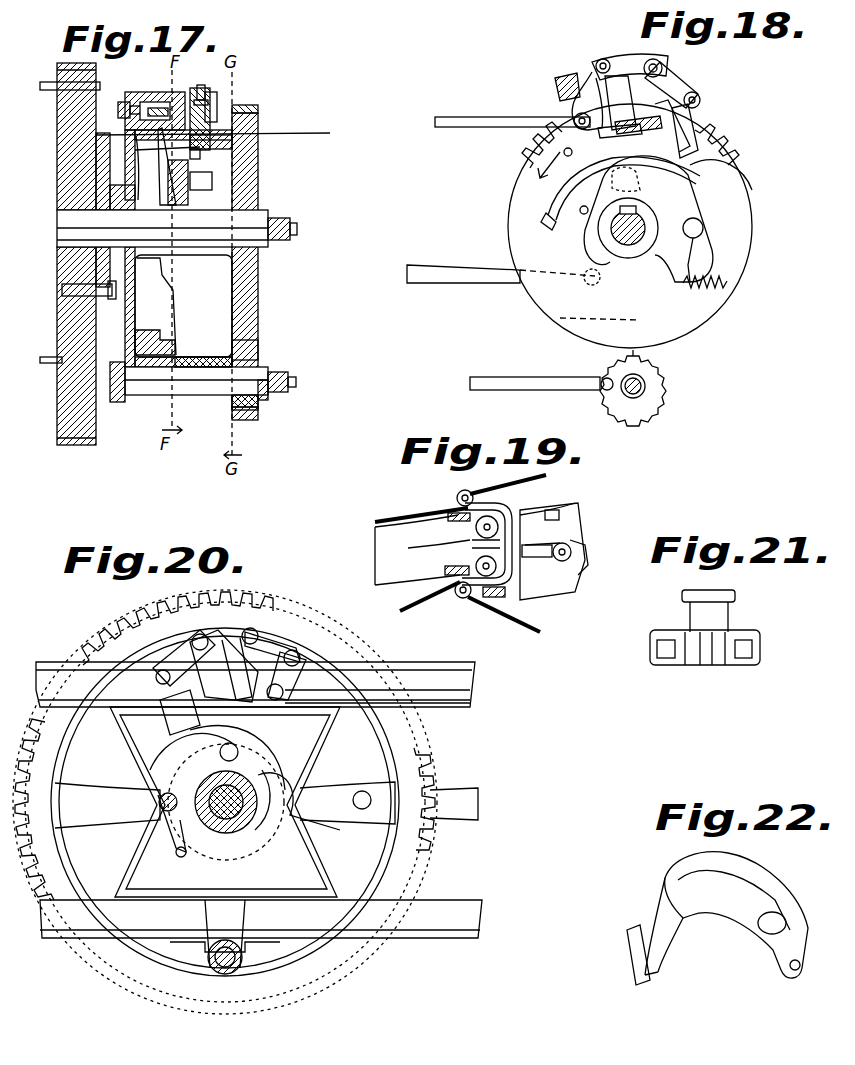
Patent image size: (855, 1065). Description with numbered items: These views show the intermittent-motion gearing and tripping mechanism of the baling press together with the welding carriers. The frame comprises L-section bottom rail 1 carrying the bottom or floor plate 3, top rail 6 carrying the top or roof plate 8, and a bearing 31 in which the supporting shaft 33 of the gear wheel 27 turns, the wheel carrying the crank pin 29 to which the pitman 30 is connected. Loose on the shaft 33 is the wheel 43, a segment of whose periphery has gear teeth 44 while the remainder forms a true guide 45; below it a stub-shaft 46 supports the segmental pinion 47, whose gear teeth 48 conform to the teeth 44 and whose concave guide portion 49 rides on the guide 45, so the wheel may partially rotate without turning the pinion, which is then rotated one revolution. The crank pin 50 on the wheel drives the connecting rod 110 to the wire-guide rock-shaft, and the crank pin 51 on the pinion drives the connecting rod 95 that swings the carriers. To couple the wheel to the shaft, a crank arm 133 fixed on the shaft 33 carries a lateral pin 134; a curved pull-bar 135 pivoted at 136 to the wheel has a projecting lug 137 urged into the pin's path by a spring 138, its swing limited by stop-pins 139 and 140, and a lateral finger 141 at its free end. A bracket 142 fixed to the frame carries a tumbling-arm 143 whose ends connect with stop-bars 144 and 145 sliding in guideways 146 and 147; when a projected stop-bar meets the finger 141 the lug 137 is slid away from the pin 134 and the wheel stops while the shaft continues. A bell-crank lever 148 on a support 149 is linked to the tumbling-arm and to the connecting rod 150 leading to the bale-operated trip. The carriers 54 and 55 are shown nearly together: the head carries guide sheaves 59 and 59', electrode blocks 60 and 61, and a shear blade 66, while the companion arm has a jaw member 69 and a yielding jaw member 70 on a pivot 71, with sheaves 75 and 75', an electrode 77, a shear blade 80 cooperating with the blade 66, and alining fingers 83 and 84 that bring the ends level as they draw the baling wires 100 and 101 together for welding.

In FIG. 17, the bottom rail 1 is at (158, 338).
In FIG. 20, the bottom rail 1 is at (55, 940).
In FIG. 17, the bottom or floor plate 3 is at (50, 363).
In FIG. 17, the top rail 6 is at (136, 105).
In FIG. 20, the top rail 6 is at (55, 662).
In FIG. 17, the top or roof plate 8 is at (73, 77).
In FIG. 17, the gear wheel 27 is at (78, 440).
In FIG. 20, the gear wheel 27 is at (100, 650).
In FIG. 20, the crank pin 29 is at (362, 791).
In FIG. 20, the pitman 30 is at (460, 820).
In FIG. 17, the bearing 31 is at (110, 260).
In FIG. 17, the supporting shaft 33 is at (212, 240).
In FIG. 18, the supporting shaft 33 is at (627, 245).
In FIG. 20, the supporting shaft 33 is at (250, 820).
In FIG. 17, the wheel 43 is at (258, 300).
In FIG. 18, the wheel 43 is at (735, 229).
In FIG. 17, the gear teeth 44 is at (258, 108).
In FIG. 18, the gear teeth 44 is at (525, 155).
In FIG. 17, the guide 45 is at (258, 340).
In FIG. 18, the guide 45 is at (545, 300).
In FIG. 17, the stub-shaft 46 is at (203, 380).
In FIG. 18, the stub-shaft 46 is at (630, 398).
In FIG. 20, the stub-shaft 46 is at (225, 975).
In FIG. 17, the segmental pinion 47 is at (258, 404).
In FIG. 18, the segmental pinion 47 is at (640, 408).
In FIG. 20, the segmental pinion 47 is at (235, 968).
In FIG. 17, the gear teeth 48 is at (250, 420).
In FIG. 18, the gear teeth 48 is at (662, 405).
In FIG. 17, the concave guide portion 49 is at (232, 362).
In FIG. 18, the concave guide portion 49 is at (650, 358).
In FIG. 17, the crank pin 50 is at (297, 229).
In FIG. 17, the crank pin 51 is at (296, 383).
In FIG. 19, the carrier 54 is at (375, 550).
In FIG. 19, the carrier 55 is at (585, 530).
In FIG. 19, the grooved roller or guide sheave 59 is at (437, 501).
In FIG. 19, the grooved roller or guide sheave 59' is at (413, 576).
In FIG. 19, the block 60 is at (480, 518).
In FIG. 19, the block 61 is at (470, 575).
In FIG. 19, the shear blade 66 is at (470, 545).
In FIG. 19, the jaw member 69 is at (530, 505).
In FIG. 19, the yielding jaw member 70 is at (552, 586).
In FIG. 19, the pivot 71 is at (588, 568).
In FIG. 19, the grooved roller or guide sheave 75 is at (501, 484).
In FIG. 19, the grooved roller or guide sheave 75' is at (455, 607).
In FIG. 19, the electrical terminal block or electrode 77 is at (505, 596).
In FIG. 19, the shear blade 80 is at (555, 580).
In FIG. 19, the downwardly curved finger 83 is at (560, 514).
In FIG. 19, the finger 84 is at (571, 553).
In FIG. 17, the connecting rod 95 is at (268, 395).
In FIG. 18, the connecting rod 95 is at (490, 377).
In FIG. 19, the baling wire 100 is at (395, 518).
In FIG. 19, the baling wire 101 is at (528, 632).
In FIG. 17, the connecting rod 110 is at (268, 243).
In FIG. 18, the connecting rod 110 is at (445, 265).
In FIG. 17, the crank arm 133 is at (188, 165).
In FIG. 18, the crank arm 133 is at (690, 203).
In FIG. 20, the crank arm 133 is at (295, 835).
In FIG. 17, the lateral pin 134 is at (212, 182).
In FIG. 20, the lateral pin 134 is at (175, 755).
In FIG. 17, the curved pull-bar 135 is at (232, 150).
In FIG. 18, the curved pull-bar 135 is at (565, 190).
In FIG. 20, the curved pull-bar 135 is at (330, 805).
In FIG. 22, the curved pull-bar 135 is at (713, 922).
In FIG. 18, the pivot 136 is at (698, 240).
In FIG. 20, the pivot 136 is at (160, 820).
In FIG. 20, the projecting lug 137 is at (280, 776).
In FIG. 22, the projecting lug 137 is at (668, 895).
In FIG. 18, the spring 138 is at (730, 288).
In FIG. 18, the stop-pin 139 is at (584, 214).
In FIG. 18, the stop-pin 140 is at (564, 151).
In FIG. 17, the lateral finger 141 is at (228, 136).
In FIG. 18, the lateral finger 141 is at (541, 222).
In FIG. 22, the lateral finger 141 is at (630, 958).
In FIG. 17, the bracket 142 is at (190, 130).
In FIG. 18, the bracket 142 is at (662, 78).
In FIG. 20, the bracket 142 is at (222, 640).
In FIG. 21, the bracket 142 is at (728, 614).
In FIG. 17, the tumbling-arm 143 is at (201, 85).
In FIG. 18, the tumbling-arm 143 is at (700, 96).
In FIG. 20, the tumbling-arm 143 is at (185, 648).
In FIG. 17, the stop-bar 144 is at (145, 172).
In FIG. 18, the stop-bar 144 is at (612, 140).
In FIG. 20, the stop-bar 144 is at (240, 752).
In FIG. 18, the stop-bar 145 is at (700, 180).
In FIG. 20, the stop-bar 145 is at (178, 718).
In FIG. 17, the guideway 146 is at (215, 108).
In FIG. 18, the guideway 146 is at (575, 106).
In FIG. 21, the guideway 146 is at (752, 648).
In FIG. 18, the guideway 147 is at (700, 125).
In FIG. 21, the guideway 147 is at (665, 658).
In FIG. 18, the bell-crank lever 148 is at (585, 68).
In FIG. 20, the bell-crank lever 148 is at (270, 640).
In FIG. 18, the support 149 is at (555, 80).
In FIG. 20, the support 149 is at (300, 660).
In FIG. 18, the connecting rod 150 is at (466, 117).
In FIG. 20, the connecting rod 150 is at (440, 705).